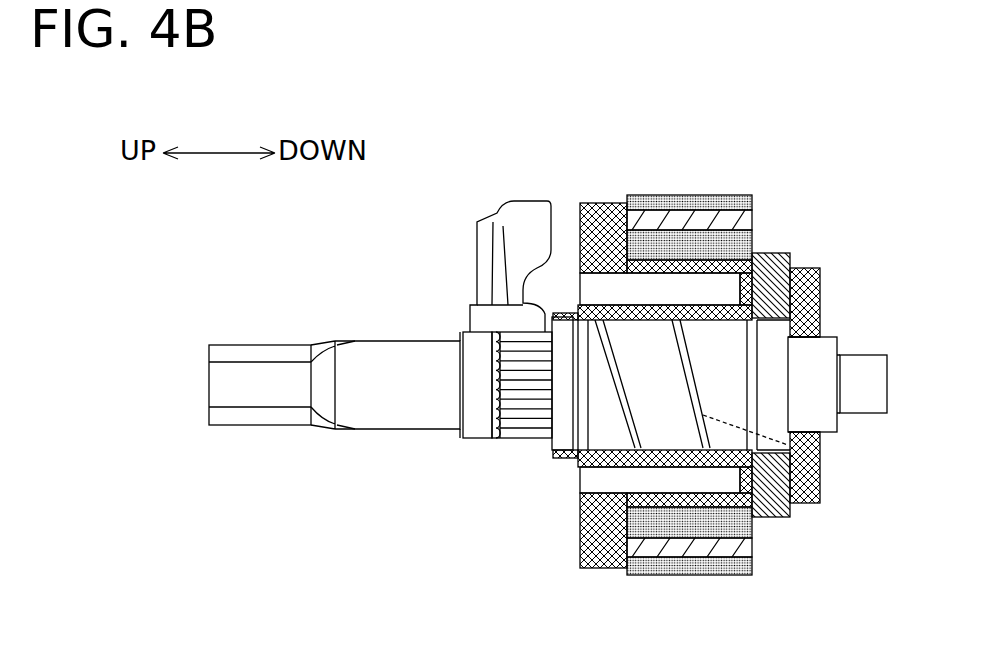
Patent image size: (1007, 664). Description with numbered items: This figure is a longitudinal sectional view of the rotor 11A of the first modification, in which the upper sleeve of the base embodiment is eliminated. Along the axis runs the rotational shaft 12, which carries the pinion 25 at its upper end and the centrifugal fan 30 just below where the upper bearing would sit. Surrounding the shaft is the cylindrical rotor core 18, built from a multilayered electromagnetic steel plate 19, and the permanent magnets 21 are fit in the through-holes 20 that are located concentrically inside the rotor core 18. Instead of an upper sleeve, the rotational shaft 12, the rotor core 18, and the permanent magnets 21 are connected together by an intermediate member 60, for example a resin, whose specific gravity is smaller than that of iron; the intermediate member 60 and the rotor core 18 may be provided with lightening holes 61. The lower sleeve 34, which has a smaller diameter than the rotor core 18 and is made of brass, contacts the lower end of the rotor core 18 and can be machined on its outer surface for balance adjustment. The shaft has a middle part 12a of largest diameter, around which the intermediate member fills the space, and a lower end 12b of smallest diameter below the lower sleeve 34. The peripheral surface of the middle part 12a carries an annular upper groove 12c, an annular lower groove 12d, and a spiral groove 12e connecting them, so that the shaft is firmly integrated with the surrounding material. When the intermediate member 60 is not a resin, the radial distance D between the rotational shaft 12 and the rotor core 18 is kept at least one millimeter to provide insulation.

The rotor 11A is at (488, 121).
The rotational shaft 12 is at (395, 362).
The middle part 12a is at (737, 335).
The lower end 12b is at (827, 418).
The upper groove 12c is at (587, 413).
The lower groove 12d is at (750, 365).
The spiral groove 12e is at (820, 450).
The rotor core 18 is at (693, 183).
The electromagnetic steel plate 19 is at (657, 197).
The through-holes 20 is at (717, 197).
The permanent magnets 21 is at (740, 212).
The pinion 25 is at (253, 352).
The centrifugal fan 30 is at (522, 208).
The lower sleeve 34 is at (775, 253).
The intermediate member 60 is at (596, 200).
The lightening holes 61 is at (613, 287).
The radial distance D is at (705, 277).